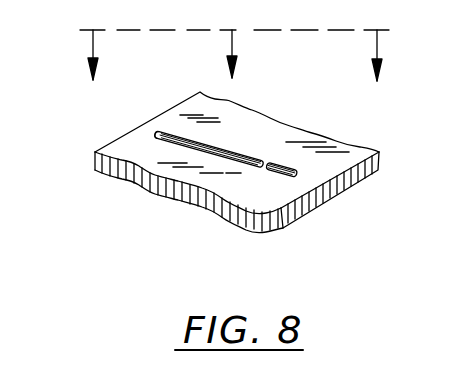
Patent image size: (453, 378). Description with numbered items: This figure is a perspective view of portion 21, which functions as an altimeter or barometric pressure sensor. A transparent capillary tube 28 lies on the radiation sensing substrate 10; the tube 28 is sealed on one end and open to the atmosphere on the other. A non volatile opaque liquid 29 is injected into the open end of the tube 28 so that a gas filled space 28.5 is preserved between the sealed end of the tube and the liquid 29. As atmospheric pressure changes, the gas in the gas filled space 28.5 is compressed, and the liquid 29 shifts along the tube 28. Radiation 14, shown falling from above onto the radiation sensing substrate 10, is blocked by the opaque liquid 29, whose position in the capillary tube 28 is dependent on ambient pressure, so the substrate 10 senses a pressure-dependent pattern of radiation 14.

The radiation sensing substrate 10 is at (323, 198).
The radiation 14 is at (105, 29).
The portion 21 is at (190, 214).
The transparent capillary tube 28 is at (157, 131).
The gas filled space 28.5 is at (160, 133).
The non volatile opaque liquid 29 is at (233, 147).